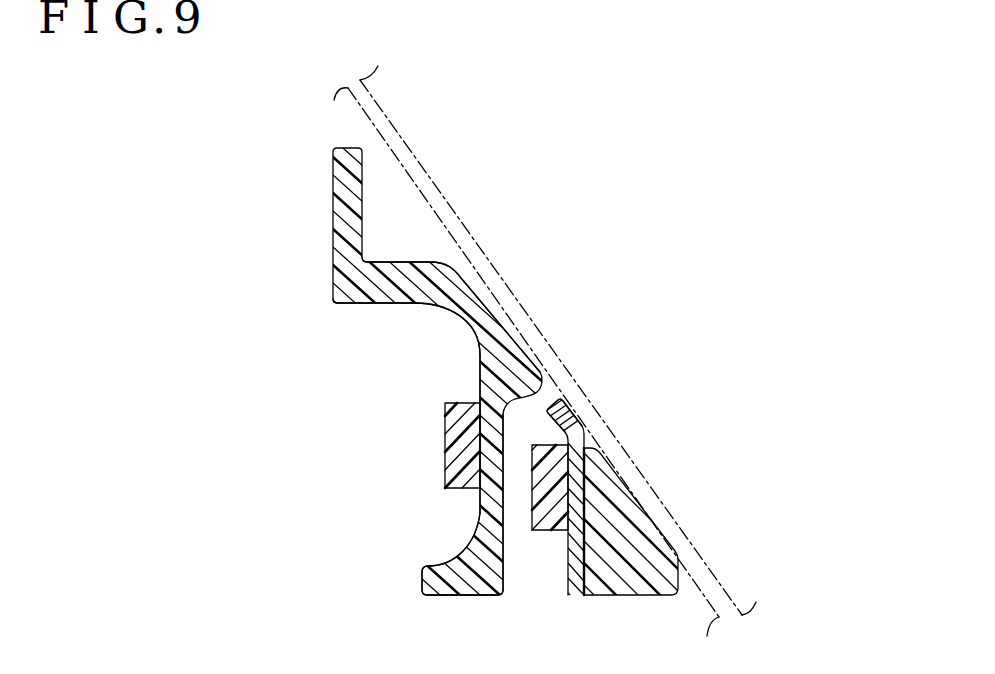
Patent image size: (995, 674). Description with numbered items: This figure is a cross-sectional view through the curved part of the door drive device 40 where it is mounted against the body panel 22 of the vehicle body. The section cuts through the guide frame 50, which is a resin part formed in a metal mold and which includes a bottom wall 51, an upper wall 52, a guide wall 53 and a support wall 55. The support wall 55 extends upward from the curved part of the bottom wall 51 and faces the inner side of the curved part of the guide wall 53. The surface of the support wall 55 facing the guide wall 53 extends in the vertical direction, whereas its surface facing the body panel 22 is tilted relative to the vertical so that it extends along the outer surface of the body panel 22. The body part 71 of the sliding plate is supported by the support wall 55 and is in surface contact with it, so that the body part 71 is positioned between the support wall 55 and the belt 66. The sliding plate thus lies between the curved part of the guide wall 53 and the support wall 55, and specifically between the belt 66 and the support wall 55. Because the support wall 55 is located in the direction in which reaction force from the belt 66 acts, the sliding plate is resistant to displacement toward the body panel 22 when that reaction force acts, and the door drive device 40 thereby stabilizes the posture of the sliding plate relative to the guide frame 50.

The door drive device 40 is at (664, 113).
The body panel 22 is at (426, 153).
The guide frame 50 is at (326, 172).
The upper wall 52 is at (333, 272).
The guide wall 53 is at (480, 388).
The bottom wall 51 is at (612, 593).
The belt 66 is at (532, 503).
The support wall 55 is at (588, 440).
The body part 71 is at (553, 398).